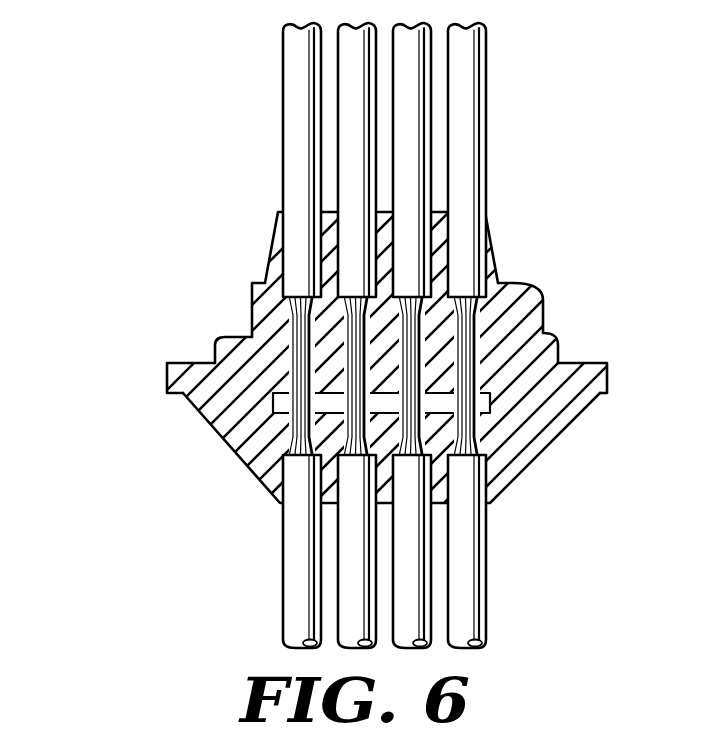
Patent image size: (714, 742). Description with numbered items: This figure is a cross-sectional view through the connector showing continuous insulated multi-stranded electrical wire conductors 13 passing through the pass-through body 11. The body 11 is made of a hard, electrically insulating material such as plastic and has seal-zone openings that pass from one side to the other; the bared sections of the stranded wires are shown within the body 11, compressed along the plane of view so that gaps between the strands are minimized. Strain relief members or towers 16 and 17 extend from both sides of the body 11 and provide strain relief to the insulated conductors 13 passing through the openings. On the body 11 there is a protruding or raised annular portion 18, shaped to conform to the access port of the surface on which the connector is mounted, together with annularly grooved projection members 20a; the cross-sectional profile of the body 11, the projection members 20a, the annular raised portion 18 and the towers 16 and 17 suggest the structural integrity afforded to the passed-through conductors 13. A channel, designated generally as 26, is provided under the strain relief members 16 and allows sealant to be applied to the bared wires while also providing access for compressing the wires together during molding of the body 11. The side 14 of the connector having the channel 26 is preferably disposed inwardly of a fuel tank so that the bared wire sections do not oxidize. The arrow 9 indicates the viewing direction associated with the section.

The viewing direction arrow 9 is at (117, 288).
The body 11 is at (625, 363).
The insulated electrical conductors 13 is at (407, 170).
The first side 14 is at (171, 396).
The strain relief members 16 is at (625, 400).
The strain relief members 17 is at (624, 212).
The raised annular portion 18 is at (625, 282).
The annularly grooved projection members 20a is at (625, 335).
The access channel 26 is at (276, 410).